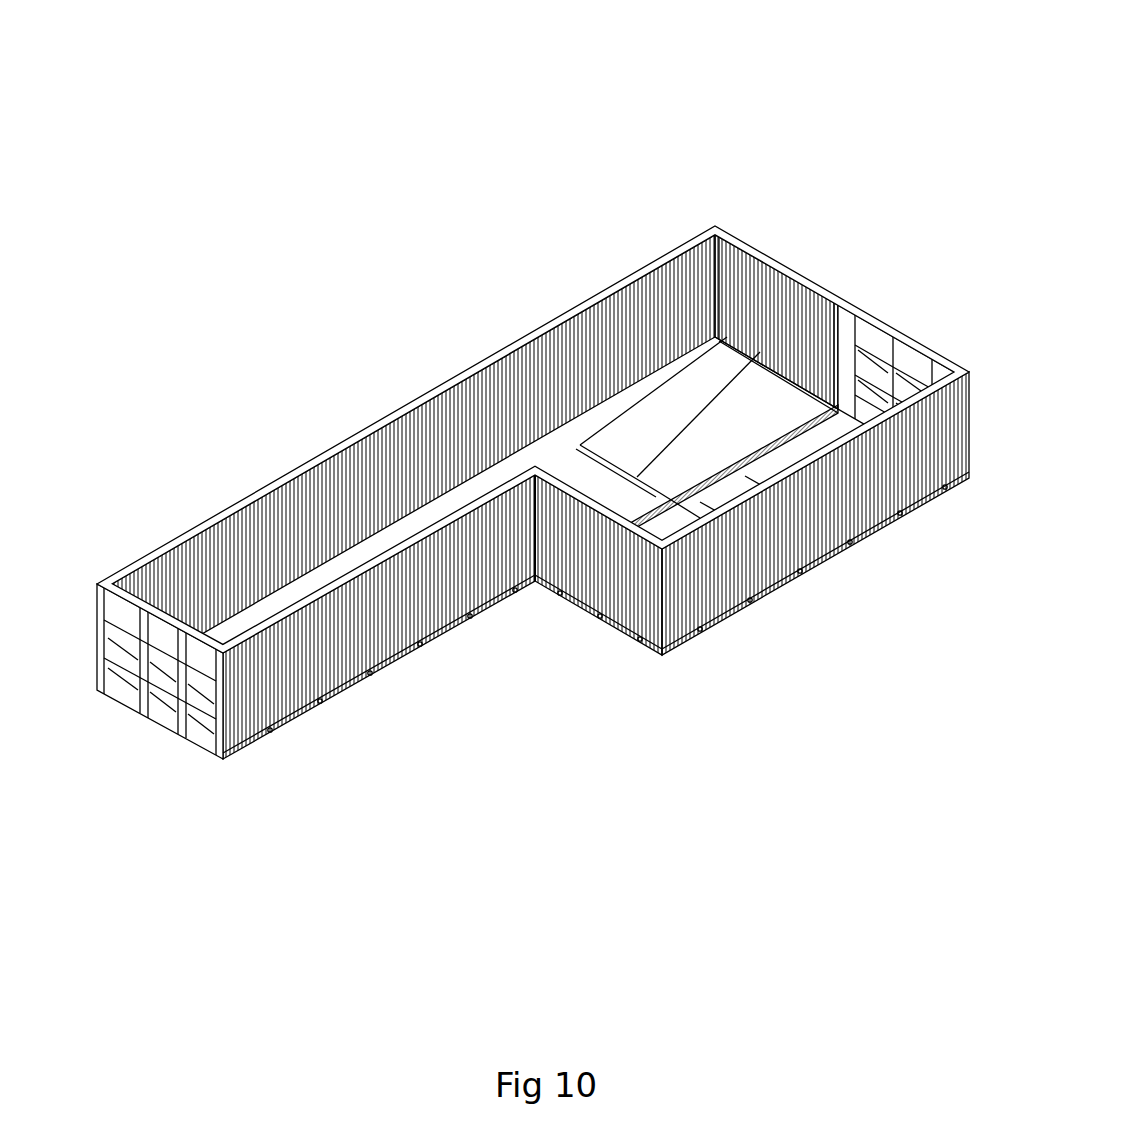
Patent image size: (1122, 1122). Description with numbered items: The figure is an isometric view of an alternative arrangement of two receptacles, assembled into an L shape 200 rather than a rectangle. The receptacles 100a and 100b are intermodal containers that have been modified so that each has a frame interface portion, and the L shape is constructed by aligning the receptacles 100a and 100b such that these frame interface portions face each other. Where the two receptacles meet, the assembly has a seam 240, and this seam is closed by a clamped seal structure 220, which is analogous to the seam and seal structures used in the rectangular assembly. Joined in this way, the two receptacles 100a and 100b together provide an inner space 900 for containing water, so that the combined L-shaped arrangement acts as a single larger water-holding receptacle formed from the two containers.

The L shape 200 is at (516, 414).
The receptacle 100a is at (143, 695).
The receptacle 100b is at (750, 597).
The clamped seal structure 220 is at (532, 575).
The seam 240 is at (732, 458).
The inner space 900 is at (655, 395).